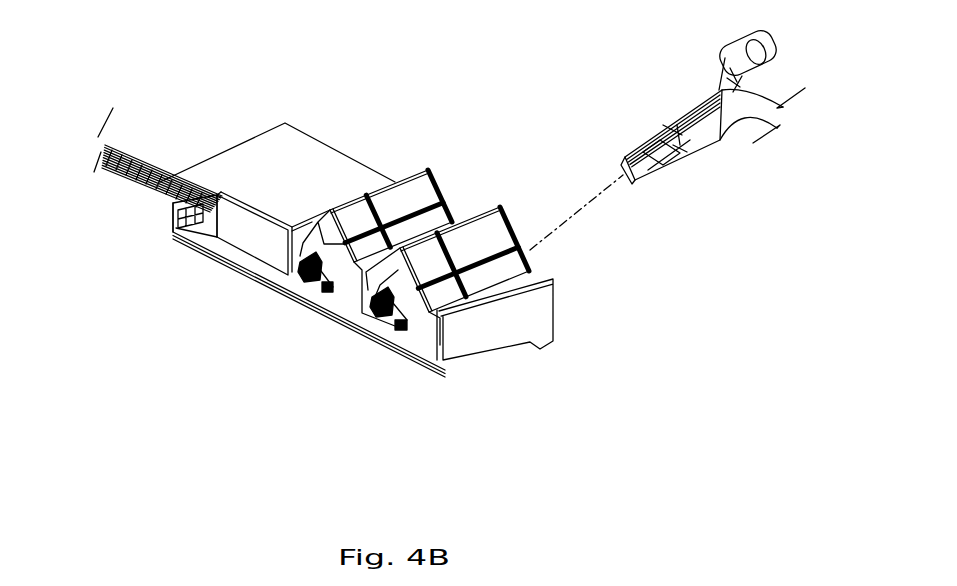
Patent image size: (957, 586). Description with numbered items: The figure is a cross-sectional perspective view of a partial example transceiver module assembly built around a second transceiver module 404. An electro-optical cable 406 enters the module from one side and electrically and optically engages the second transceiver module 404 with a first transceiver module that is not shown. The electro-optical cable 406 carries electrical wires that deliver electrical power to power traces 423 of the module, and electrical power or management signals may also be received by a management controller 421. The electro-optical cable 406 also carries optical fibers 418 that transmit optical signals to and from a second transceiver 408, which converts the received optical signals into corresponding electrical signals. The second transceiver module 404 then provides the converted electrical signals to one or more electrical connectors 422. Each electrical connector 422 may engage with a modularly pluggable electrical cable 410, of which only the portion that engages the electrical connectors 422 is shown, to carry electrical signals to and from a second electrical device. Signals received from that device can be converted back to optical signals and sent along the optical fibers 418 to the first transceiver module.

The second transceiver module 404 is at (164, 55).
The electro-optical cable 406 is at (112, 178).
The second transceiver 408 is at (265, 247).
The electrical cable 410 is at (681, 165).
The optical fibers 418 is at (203, 187).
The management controller 421 is at (198, 245).
The electrical connectors 422 is at (430, 198).
The power traces 423 is at (177, 203).